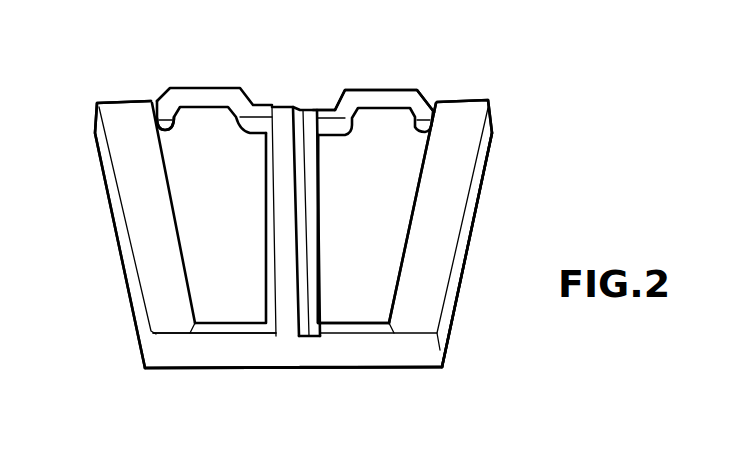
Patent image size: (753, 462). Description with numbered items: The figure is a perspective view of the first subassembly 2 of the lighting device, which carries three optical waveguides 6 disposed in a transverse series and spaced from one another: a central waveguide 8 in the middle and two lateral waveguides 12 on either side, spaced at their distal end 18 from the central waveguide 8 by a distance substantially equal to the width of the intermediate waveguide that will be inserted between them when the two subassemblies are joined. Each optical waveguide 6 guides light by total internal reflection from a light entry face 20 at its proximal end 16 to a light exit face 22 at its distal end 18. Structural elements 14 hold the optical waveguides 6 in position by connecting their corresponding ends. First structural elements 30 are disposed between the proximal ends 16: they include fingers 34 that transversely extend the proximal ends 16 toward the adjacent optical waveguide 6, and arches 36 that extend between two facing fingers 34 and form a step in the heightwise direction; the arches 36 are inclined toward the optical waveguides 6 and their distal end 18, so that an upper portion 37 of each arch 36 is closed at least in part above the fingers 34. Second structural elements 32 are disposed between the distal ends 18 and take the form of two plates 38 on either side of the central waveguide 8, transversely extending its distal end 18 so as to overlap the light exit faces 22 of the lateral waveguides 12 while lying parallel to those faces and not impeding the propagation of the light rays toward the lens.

The first subassembly 2 is at (327, 234).
The optical waveguides 6 is at (292, 228).
The central waveguide 8 is at (303, 199).
The lateral waveguides 12 is at (380, 213).
The structural elements 14 is at (323, 244).
The proximal ends 16 is at (475, 220).
The distal ends 18 is at (416, 250).
The light entry face 20 is at (141, 202).
The light exit face 22 is at (251, 364).
The first structural elements 30 is at (378, 86).
The second structural elements 32 is at (293, 406).
The fingers 34 is at (184, 143).
The arches 36 is at (214, 146).
The upper portion 37 is at (214, 83).
The plates 38 is at (384, 74).